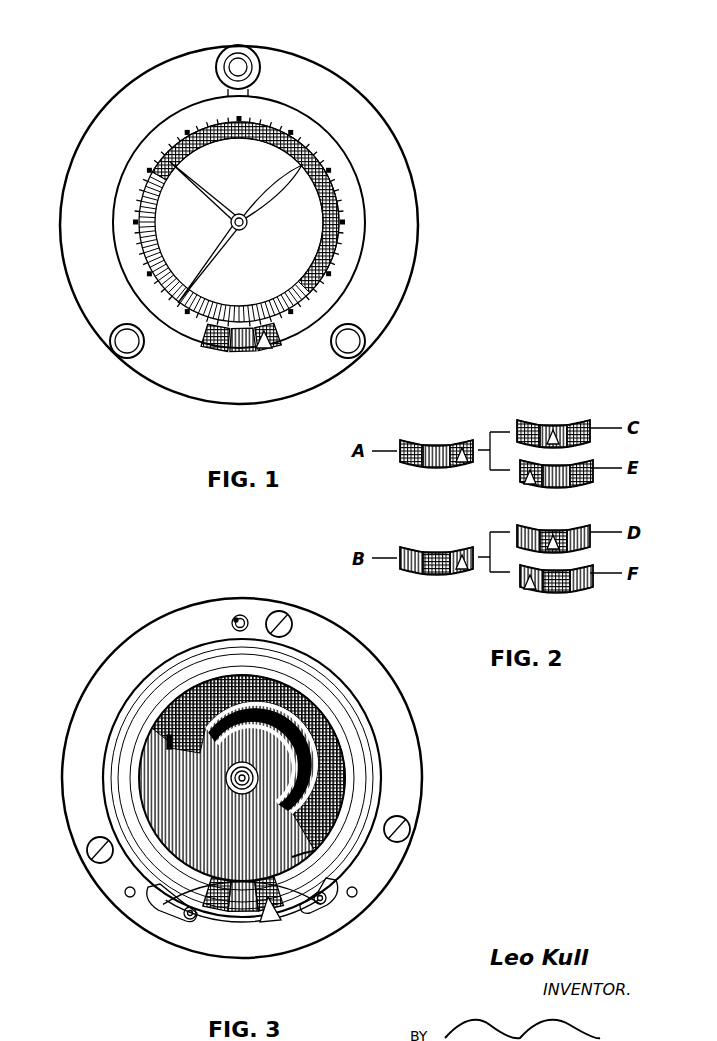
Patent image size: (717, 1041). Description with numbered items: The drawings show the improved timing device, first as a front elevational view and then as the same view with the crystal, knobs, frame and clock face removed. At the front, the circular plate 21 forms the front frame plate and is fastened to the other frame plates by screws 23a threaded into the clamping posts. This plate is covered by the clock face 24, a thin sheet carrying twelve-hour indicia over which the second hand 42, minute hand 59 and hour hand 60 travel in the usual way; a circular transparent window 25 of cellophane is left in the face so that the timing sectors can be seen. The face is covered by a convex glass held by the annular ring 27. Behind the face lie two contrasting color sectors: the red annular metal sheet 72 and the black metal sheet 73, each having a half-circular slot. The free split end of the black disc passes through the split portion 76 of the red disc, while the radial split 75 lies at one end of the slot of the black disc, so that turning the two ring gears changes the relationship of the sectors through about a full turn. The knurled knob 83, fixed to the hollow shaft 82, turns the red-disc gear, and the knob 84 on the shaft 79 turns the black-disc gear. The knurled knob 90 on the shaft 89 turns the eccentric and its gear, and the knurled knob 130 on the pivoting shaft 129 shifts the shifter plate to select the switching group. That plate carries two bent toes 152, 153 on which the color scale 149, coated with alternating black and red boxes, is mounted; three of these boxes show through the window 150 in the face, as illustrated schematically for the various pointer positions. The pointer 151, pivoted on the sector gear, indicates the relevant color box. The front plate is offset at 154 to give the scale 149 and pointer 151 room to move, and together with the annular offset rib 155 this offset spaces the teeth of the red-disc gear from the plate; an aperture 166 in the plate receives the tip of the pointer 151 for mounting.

In FIG. 3, the circular plate 21 is at (134, 660).
In FIG. 3, the screws 23a is at (283, 617).
In FIG. 1, the clock face 24 is at (328, 156).
In FIG. 1, the transparent window 25 is at (142, 252).
In FIG. 1, the annular ring 27 is at (398, 211).
In FIG. 1, the second hand 42 is at (197, 187).
In FIG. 1, the minute hand 59 is at (210, 260).
In FIG. 1, the hour hand 60 is at (275, 193).
In FIG. 1, the annular metal sheet 72 is at (142, 203).
In FIG. 3, the annular metal sheet 72 is at (170, 787).
In FIG. 1, the metal sheet 73 is at (170, 148).
In FIG. 3, the metal sheet 73 is at (340, 760).
In FIG. 3, the radial split 75 is at (297, 853).
In FIG. 3, the split portion 76 is at (167, 745).
In FIG. 3, the shaft 79 is at (234, 619).
In FIG. 3, the hollow shaft 82 is at (243, 614).
In FIG. 1, the knurled knob 83 is at (221, 54).
In FIG. 1, the knob 84 is at (250, 63).
In FIG. 3, the shaft 89 is at (127, 898).
In FIG. 1, the knurled knob 90 is at (124, 343).
In FIG. 3, the pivoting shaft 129 is at (355, 897).
In FIG. 1, the knurled knob 130 is at (351, 340).
In FIG. 1, the scale 149 is at (217, 350).
In FIG. 3, the scale 149 is at (242, 903).
In FIG. 1, the window 150 is at (240, 348).
In FIG. 1, the pointer 151 is at (269, 351).
In FIG. 2, the pointer 151 is at (526, 481).
In FIG. 3, the pointer 151 is at (268, 915).
In FIG. 3, the toe 152 is at (190, 919).
In FIG. 3, the toe 153 is at (321, 904).
In FIG. 3, the offset 154 is at (178, 888).
In FIG. 3, the annular offset rib 155 is at (330, 686).
In FIG. 3, the aperture 166 is at (285, 908).